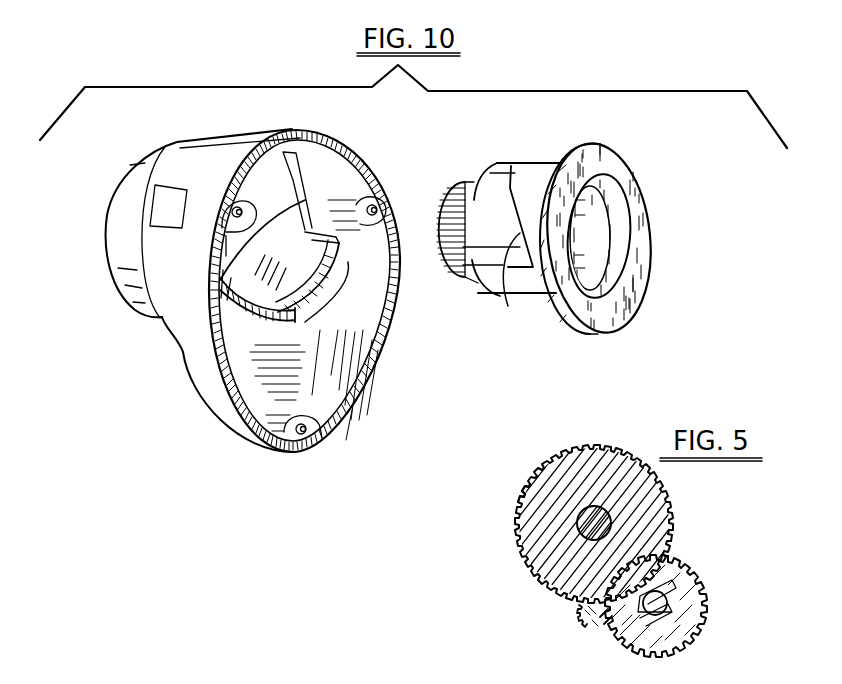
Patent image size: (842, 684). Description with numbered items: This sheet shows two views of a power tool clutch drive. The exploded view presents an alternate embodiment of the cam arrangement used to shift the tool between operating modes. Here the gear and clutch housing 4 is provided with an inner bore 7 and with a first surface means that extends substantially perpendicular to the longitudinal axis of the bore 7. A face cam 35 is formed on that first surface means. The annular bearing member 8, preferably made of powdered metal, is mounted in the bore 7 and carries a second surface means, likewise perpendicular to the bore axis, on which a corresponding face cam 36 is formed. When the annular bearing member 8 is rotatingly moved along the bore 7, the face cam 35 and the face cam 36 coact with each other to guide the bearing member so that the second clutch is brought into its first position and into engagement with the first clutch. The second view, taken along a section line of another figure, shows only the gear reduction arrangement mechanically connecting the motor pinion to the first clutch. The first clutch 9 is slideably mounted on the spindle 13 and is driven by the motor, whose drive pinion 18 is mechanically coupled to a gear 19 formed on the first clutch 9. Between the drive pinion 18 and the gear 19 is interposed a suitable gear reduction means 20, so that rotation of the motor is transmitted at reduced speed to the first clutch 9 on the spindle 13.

In FIG. 10, the gear and clutch housing 4 is at (192, 138).
In FIG. 10, the inner bore 7 is at (246, 294).
In FIG. 10, the face cam 35 is at (330, 256).
In FIG. 10, the annular bearing member 8 is at (528, 163).
In FIG. 10, the face cam 36 is at (508, 306).
In FIG. 5, the first clutch 9 is at (647, 532).
In FIG. 5, the spindle 13 is at (603, 521).
In FIG. 5, the gear 19 is at (517, 508).
In FIG. 5, the gear reduction means 20 is at (722, 601).
In FIG. 5, the drive pinion 18 is at (588, 620).